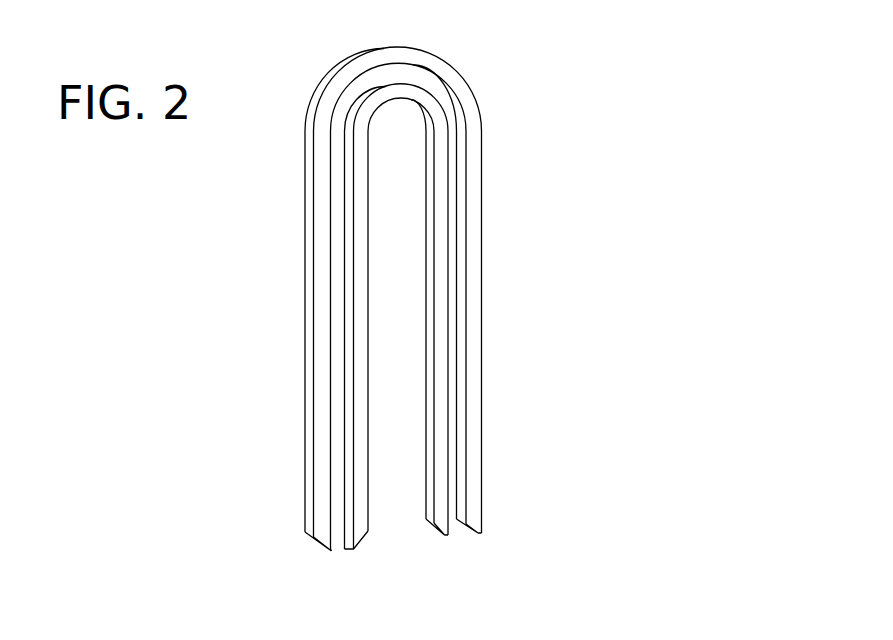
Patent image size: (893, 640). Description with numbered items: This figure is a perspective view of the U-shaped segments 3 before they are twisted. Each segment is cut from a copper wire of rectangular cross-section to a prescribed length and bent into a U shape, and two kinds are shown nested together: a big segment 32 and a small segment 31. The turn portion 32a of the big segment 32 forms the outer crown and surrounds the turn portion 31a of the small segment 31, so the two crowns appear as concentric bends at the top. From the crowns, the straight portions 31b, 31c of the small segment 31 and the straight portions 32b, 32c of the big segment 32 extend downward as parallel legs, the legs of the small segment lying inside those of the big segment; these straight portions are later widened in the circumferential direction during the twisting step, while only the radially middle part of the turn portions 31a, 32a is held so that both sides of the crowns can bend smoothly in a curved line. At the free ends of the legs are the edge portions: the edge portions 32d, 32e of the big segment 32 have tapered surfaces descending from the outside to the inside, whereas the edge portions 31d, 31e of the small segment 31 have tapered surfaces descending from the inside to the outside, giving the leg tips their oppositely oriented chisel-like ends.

The U-shaped segment 3 is at (482, 143).
The small segment 31 is at (438, 236).
The big segment 32 is at (473, 205).
The turn portion of the small segment 31a is at (416, 96).
The turn portion of the big segment 32a is at (376, 62).
The straight portion of the small segment 31b is at (358, 333).
The straight portion of the big segment 32b is at (323, 390).
The straight portion of the small segment 31c is at (441, 333).
The straight portion of the big segment 32c is at (470, 366).
The edge portion of the small segment 31d is at (361, 533).
The edge portion of the big segment 32d is at (324, 535).
The edge portion of the small segment 31e is at (433, 522).
The edge portion of the big segment 32e is at (471, 514).